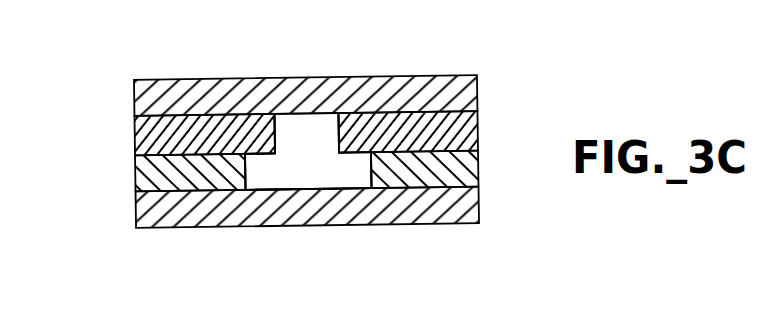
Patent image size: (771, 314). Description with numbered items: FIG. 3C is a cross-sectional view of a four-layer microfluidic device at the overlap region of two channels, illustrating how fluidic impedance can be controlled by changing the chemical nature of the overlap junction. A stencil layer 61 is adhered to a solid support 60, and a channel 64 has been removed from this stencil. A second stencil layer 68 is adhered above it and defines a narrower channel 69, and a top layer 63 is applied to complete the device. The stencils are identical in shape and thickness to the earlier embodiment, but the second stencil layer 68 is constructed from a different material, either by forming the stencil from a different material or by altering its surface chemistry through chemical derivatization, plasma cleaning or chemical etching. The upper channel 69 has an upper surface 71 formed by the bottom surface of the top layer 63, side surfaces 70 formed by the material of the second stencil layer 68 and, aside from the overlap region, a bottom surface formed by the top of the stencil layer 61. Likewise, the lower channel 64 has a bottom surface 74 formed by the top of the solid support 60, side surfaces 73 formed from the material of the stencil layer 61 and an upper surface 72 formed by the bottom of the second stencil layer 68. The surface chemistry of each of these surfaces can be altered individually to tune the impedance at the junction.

The solid support 60 is at (135, 211).
The stencil layer 61 is at (135, 173).
The top layer 63 is at (135, 96).
The second stencil layer 68 is at (135, 136).
The side surfaces 70 is at (287, 132).
The upper surface 71 is at (302, 112).
The upper surface 72 is at (345, 150).
The side surfaces 73 is at (371, 173).
The bottom surface 74 is at (272, 188).
The channel 64 is at (296, 177).
The channel 69 is at (297, 142).